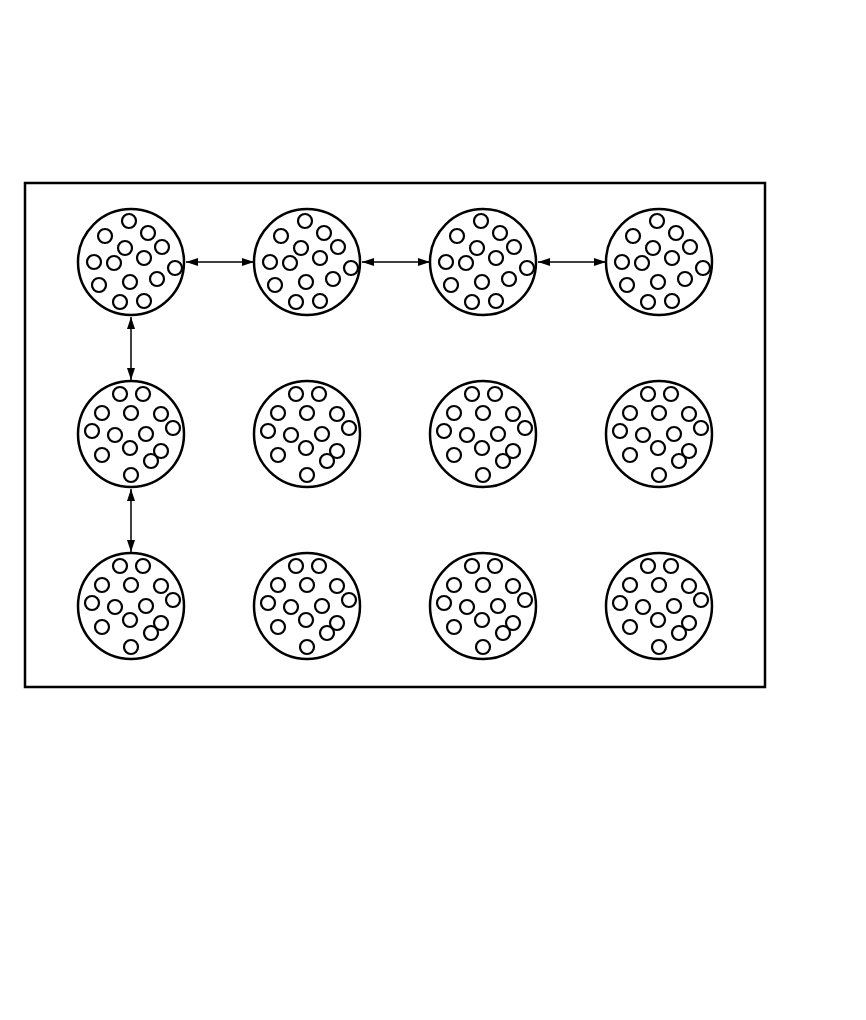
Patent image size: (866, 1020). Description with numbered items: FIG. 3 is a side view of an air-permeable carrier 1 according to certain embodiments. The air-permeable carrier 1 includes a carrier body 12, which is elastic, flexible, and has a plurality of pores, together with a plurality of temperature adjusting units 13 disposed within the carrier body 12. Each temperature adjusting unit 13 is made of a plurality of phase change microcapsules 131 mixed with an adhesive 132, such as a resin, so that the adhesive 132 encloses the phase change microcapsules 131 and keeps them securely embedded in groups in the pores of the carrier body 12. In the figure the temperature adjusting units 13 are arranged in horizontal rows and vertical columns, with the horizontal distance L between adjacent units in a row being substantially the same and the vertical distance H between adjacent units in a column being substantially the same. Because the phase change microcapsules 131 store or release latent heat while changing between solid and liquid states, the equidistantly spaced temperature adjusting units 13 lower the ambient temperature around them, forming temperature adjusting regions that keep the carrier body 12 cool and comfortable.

The air-permeable carrier 1 is at (800, 106).
The carrier body 12 is at (730, 478).
The temperature adjusting unit 13 is at (88, 113).
The phase change microcapsule 131 is at (105, 232).
The adhesive 132 is at (167, 228).